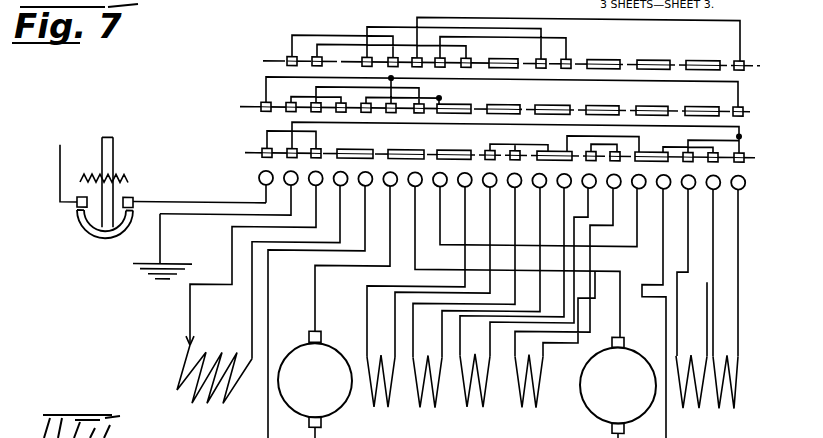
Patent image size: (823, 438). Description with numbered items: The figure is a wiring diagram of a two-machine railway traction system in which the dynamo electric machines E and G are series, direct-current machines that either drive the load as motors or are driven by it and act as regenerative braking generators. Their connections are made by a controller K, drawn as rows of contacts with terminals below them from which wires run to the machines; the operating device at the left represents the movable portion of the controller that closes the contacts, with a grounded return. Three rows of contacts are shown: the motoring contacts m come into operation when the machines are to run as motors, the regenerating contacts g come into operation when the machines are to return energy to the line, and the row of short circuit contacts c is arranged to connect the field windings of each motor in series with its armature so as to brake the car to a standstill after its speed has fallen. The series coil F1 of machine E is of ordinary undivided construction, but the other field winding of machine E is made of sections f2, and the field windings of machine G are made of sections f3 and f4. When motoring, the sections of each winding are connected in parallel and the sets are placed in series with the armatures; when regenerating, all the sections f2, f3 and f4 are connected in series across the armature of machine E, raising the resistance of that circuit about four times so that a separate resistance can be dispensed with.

The short circuit contacts c is at (515, 46).
The regenerating contacts g is at (499, 97).
The controller K is at (533, 137).
The motoring contacts m is at (509, 149).
The series field winding F1 is at (214, 380).
The dynamo electric machine E is at (315, 384).
The field winding sections f2 is at (404, 391).
The field winding sections f3 is at (501, 391).
The dynamo electric machine G is at (618, 387).
The field winding sections f4 is at (707, 392).
The controller handle and segment device is at (163, 208).